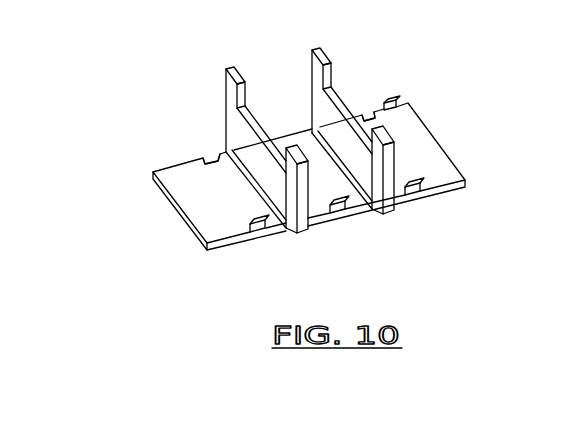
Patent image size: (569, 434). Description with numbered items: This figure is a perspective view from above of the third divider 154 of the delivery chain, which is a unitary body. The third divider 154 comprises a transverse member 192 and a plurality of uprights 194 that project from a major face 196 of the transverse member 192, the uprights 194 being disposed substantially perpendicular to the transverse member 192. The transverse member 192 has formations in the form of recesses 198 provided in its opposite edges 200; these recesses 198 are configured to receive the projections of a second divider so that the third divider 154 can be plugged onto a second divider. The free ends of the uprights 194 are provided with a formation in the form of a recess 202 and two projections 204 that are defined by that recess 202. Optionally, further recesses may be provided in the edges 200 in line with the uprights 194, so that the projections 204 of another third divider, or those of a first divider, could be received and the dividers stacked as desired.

The third divider 154 is at (320, 152).
The transverse member 192 is at (442, 151).
The uprights 194 is at (230, 107).
The major face 196 is at (200, 198).
The recesses 198 is at (262, 236).
The opposite edges 200 is at (236, 243).
The recess 202 is at (256, 136).
The projections 204 is at (252, 86).